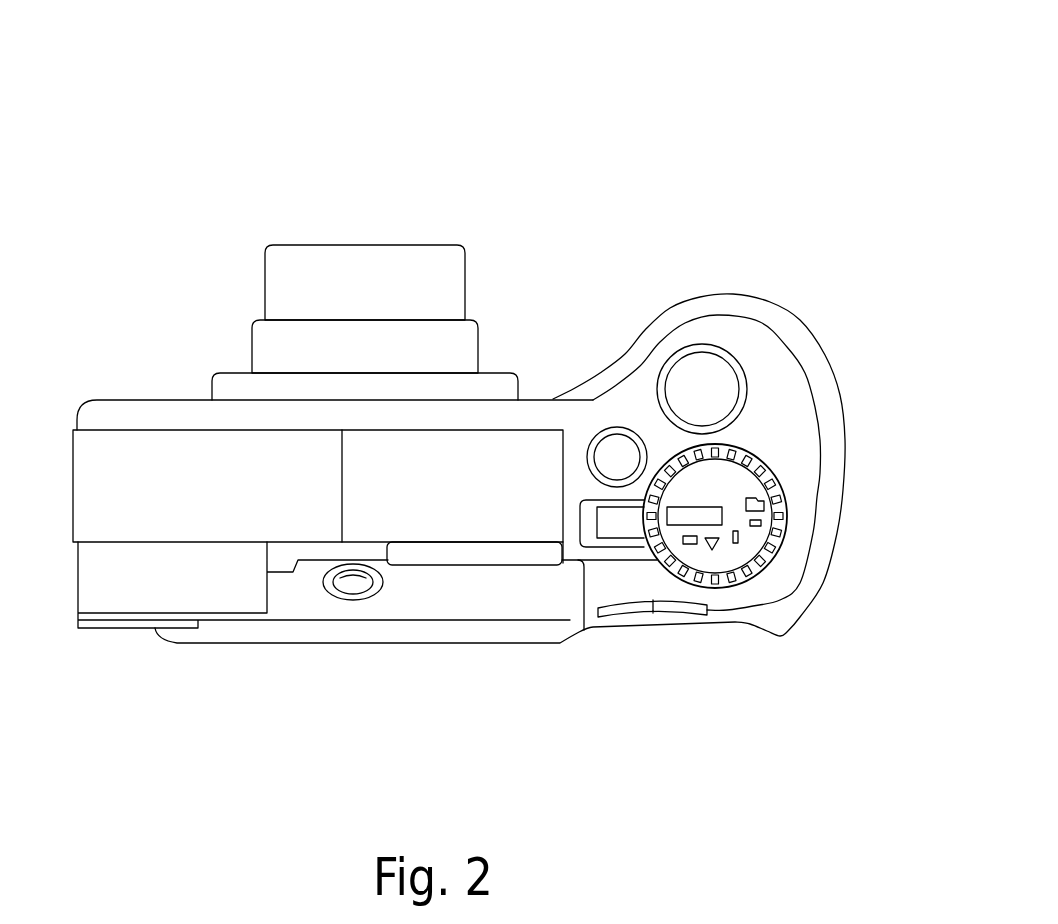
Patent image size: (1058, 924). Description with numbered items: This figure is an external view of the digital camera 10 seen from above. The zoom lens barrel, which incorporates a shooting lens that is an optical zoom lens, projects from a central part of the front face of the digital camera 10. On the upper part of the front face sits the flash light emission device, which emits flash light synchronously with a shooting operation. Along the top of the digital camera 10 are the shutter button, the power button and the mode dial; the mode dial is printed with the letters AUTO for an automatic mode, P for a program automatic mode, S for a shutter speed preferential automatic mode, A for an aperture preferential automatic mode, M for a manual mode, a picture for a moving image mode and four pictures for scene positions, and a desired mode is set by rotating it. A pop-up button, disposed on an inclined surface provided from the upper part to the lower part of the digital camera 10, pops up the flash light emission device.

The digital camera 10 is at (391, 125).